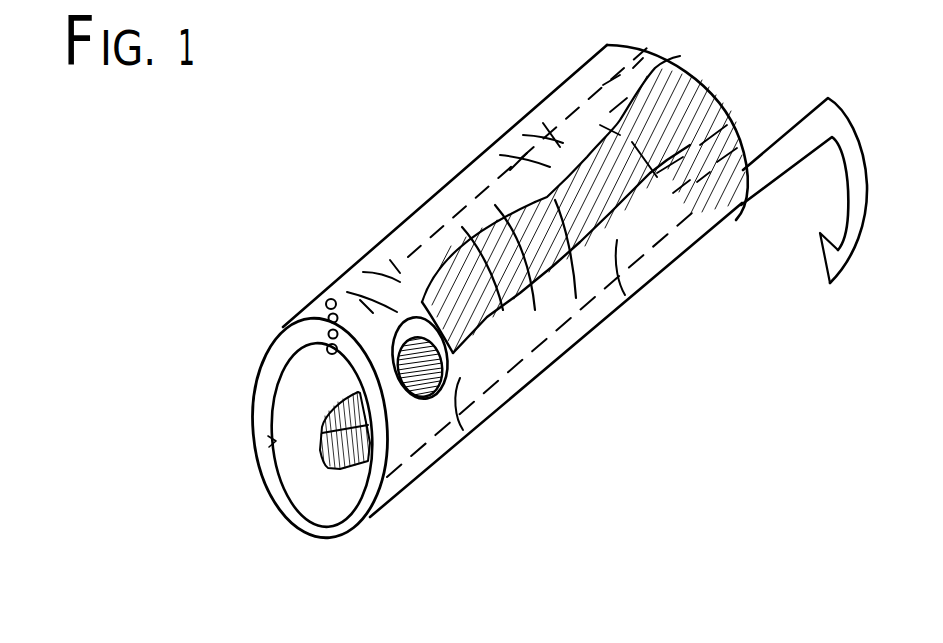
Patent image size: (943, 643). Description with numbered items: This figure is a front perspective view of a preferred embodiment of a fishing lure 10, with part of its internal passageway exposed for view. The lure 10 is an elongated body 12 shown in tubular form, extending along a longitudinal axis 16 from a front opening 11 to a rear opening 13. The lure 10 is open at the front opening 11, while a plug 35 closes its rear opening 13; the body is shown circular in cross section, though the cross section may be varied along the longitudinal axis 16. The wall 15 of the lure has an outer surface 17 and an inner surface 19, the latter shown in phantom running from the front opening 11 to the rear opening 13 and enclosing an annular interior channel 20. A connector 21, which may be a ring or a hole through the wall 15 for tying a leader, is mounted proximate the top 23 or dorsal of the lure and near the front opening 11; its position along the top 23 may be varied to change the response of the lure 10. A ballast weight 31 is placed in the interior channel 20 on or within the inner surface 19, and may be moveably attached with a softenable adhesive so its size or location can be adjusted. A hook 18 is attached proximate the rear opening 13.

The lure 10 is at (792, 322).
The front opening 11 is at (285, 380).
The elongated body 12 is at (643, 227).
The rear opening 13 is at (669, 198).
The wall 15 is at (292, 338).
The longitudinal axis 16 is at (172, 552).
The outer surface 17 is at (275, 441).
The hook 18 is at (823, 253).
The inner surface 19 is at (270, 497).
The interior channel 20 is at (480, 353).
The connector 21 is at (331, 298).
The top 23 is at (446, 212).
The ballast weight 31 is at (337, 445).
The plug 35 is at (657, 175).